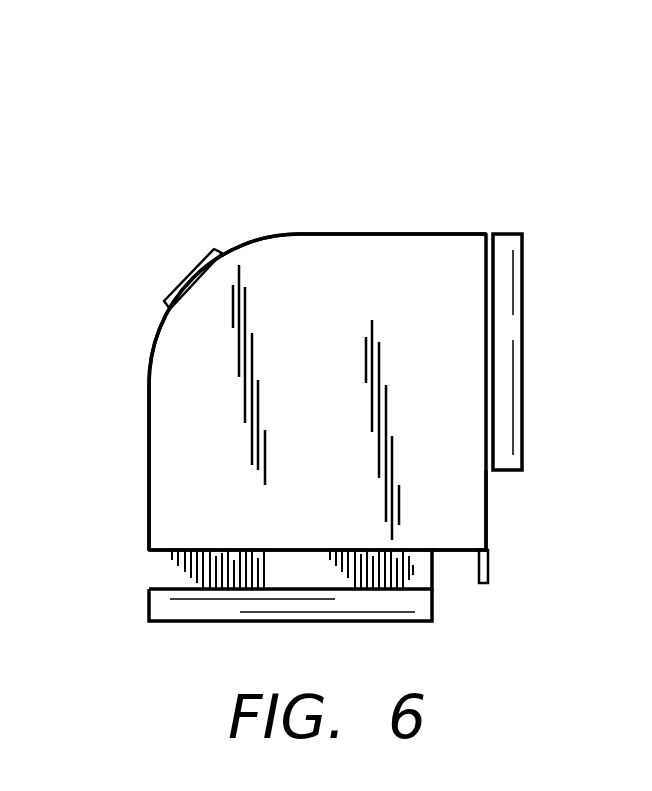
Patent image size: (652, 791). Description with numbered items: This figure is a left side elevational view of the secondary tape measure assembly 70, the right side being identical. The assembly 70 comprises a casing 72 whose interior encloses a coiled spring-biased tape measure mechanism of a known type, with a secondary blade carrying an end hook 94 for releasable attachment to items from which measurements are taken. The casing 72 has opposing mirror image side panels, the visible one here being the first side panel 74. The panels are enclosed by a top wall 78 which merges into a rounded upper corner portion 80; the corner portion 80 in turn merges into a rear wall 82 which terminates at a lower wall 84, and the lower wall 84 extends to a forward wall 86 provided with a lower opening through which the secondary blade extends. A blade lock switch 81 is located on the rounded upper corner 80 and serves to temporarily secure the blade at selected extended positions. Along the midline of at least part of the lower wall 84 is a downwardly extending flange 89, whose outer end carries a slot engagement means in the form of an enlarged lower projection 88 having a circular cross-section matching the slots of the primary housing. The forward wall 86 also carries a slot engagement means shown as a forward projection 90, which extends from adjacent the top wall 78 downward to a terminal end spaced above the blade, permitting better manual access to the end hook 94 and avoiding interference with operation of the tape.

The secondary tape measure assembly 70 is at (268, 186).
The casing 72 is at (432, 226).
The first side panel 74 is at (335, 331).
The top wall 78 is at (388, 233).
The rounded upper corner portion 80 is at (158, 330).
The blade lock switch 81 is at (167, 300).
The rear wall 82 is at (148, 438).
The lower wall 84 is at (452, 552).
The forward wall 86 is at (488, 500).
The enlarged lower projection 88 is at (170, 615).
The downwardly extending flange 89 is at (160, 573).
The forward projection 90 is at (510, 328).
The end hook 94 is at (490, 563).